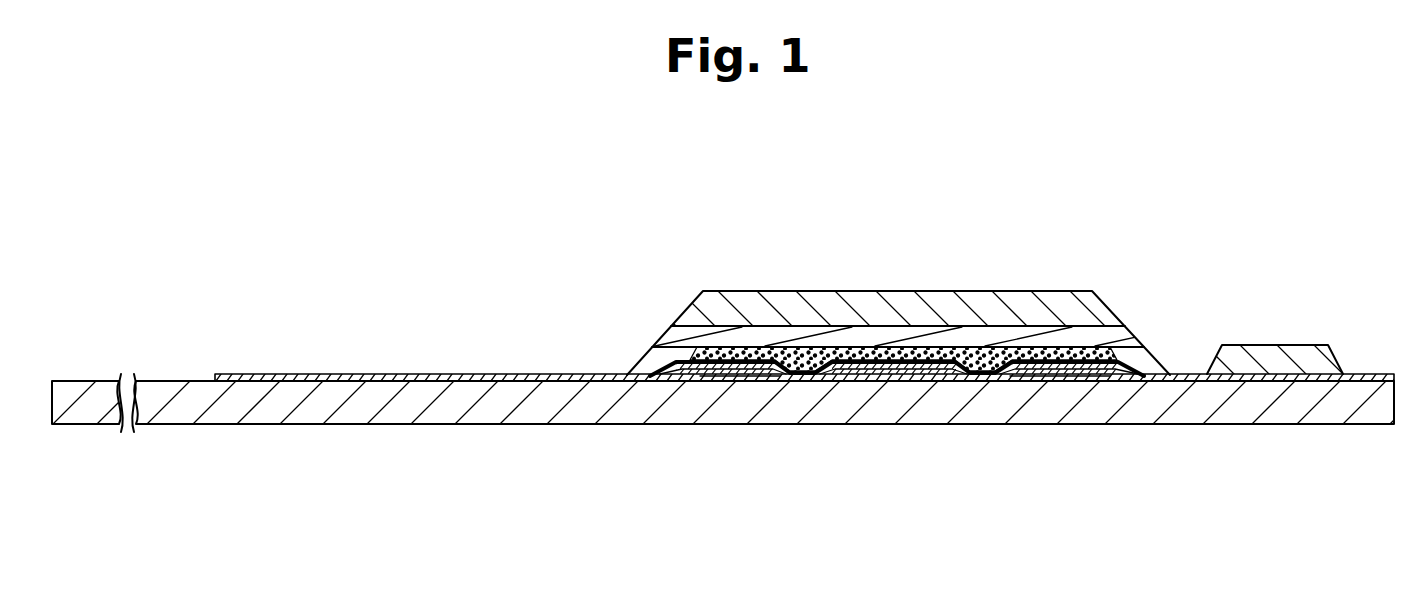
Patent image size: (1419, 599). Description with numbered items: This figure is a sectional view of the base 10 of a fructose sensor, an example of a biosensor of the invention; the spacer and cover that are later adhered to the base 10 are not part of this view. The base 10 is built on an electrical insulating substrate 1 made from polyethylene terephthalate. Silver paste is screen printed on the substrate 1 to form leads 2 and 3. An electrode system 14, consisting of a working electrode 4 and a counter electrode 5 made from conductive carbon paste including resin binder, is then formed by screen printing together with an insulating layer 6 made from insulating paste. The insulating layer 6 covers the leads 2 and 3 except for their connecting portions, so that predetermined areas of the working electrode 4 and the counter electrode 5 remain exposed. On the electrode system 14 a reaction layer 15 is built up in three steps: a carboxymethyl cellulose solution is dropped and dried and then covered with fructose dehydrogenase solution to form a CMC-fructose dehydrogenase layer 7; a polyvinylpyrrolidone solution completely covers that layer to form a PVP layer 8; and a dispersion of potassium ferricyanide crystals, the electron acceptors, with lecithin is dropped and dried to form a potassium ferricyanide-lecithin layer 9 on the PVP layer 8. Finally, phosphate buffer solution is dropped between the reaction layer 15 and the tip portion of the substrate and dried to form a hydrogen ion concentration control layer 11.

The electrical insulating substrate 1 is at (217, 425).
The lead 2 is at (893, 376).
The lead 3 is at (738, 376).
The working electrode 4 is at (918, 376).
The counter electrode 5 is at (723, 352).
The insulating layer 6 is at (575, 375).
The CMC-fructose dehydrogenase layer 7 is at (905, 355).
The PVP layer 8 is at (962, 336).
The potassium ferricyanide-lecithin layer 9 is at (920, 192).
The base 10 is at (583, 238).
The hydrogen ion concentration control layer 11 is at (1275, 358).
The electrode system 14 is at (897, 387).
The reaction layer 15 is at (904, 253).